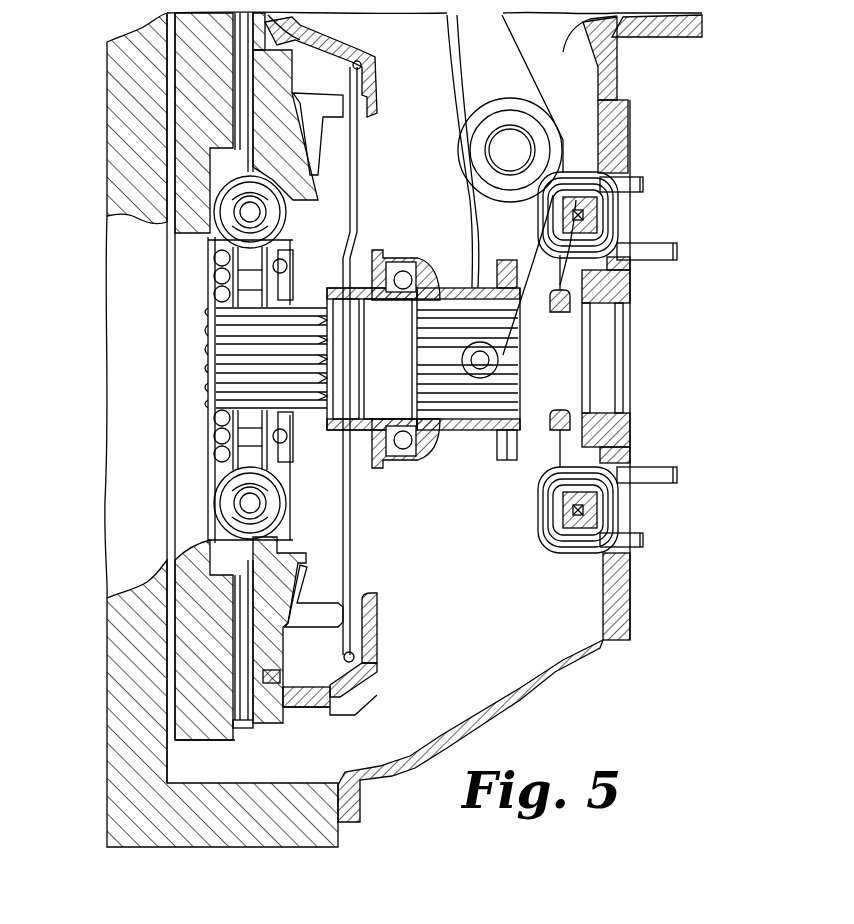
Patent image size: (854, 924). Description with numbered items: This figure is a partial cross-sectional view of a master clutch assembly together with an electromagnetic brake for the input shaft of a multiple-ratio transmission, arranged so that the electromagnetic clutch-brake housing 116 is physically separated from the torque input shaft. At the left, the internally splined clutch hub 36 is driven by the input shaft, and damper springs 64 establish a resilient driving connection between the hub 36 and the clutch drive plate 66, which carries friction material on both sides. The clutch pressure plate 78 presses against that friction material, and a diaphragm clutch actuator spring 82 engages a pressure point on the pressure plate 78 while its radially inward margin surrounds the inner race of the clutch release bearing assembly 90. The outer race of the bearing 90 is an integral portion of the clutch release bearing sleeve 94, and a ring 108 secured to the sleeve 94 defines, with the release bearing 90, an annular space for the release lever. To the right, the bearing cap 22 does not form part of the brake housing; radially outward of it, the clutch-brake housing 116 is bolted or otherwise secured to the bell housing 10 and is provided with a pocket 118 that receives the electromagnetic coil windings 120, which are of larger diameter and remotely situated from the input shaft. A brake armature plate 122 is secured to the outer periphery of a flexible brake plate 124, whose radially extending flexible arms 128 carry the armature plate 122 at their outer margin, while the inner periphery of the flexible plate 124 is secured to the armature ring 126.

The bell housing 10 is at (547, 667).
The bearing cap 22 is at (612, 435).
The clutch hub 36 is at (247, 303).
The damper springs 64 is at (277, 500).
The clutch drive plate 66 is at (173, 577).
The clutch pressure plate 78 is at (270, 115).
The diaphragm clutch actuator spring 82 is at (350, 560).
The clutch release bearing assembly 90 is at (403, 280).
The clutch release bearing sleeve 94 is at (447, 440).
The ring 108 is at (508, 443).
The electromagnetic clutch-brake housing 116 is at (620, 200).
The pocket 118 is at (563, 548).
The electromagnetic coil windings 120 is at (620, 222).
The brake armature plate 122 is at (598, 165).
The flexible brake plate 124 is at (557, 272).
The ring 126 is at (563, 313).
The flexible arms 128 is at (630, 266).